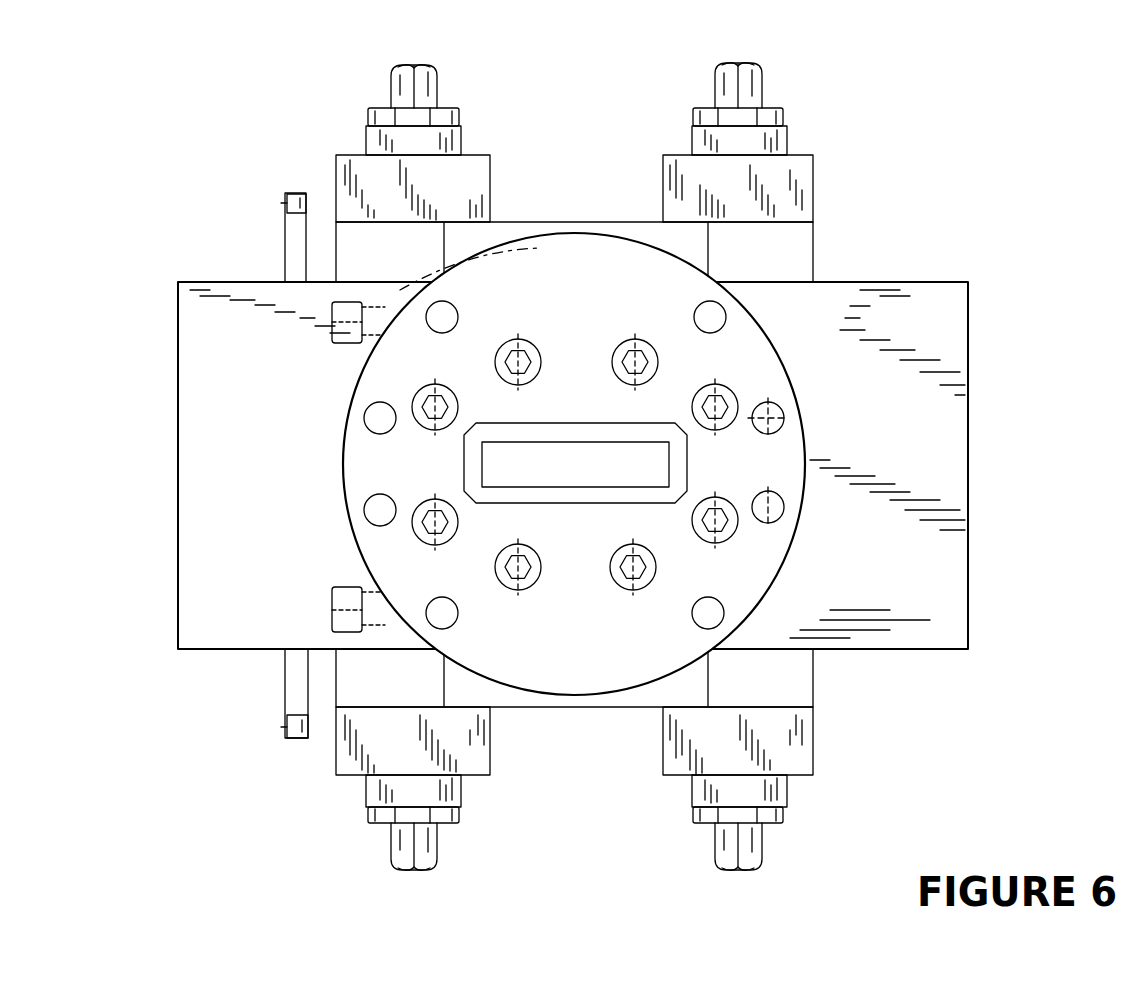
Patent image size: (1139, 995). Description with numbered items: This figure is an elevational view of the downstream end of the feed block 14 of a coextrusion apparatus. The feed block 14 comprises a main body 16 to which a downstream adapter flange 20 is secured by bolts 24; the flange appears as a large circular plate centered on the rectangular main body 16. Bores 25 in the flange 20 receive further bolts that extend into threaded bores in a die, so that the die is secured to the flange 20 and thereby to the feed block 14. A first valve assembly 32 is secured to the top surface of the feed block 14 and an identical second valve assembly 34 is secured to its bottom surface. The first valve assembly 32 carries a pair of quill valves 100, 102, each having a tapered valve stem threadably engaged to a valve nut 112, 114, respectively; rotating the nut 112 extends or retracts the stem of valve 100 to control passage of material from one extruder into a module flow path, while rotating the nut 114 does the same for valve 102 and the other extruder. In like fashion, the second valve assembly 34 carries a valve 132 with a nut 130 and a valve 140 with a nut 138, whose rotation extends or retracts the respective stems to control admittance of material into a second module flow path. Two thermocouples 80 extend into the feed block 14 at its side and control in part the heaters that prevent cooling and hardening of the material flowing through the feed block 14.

The feed block 14 is at (607, 211).
The main body 16 is at (931, 282).
The downstream adapter flange 20 is at (764, 356).
The bolts 24 is at (530, 342).
The bores 25 is at (458, 308).
The first valve assembly 32 is at (838, 196).
The second valve assembly 34 is at (840, 738).
The thermocouples 80 is at (289, 262).
The quill valve 100 is at (752, 93).
The quill valve 102 is at (430, 65).
The valve nut 112 is at (762, 64).
The valve nut 114 is at (434, 101).
The nut 130 is at (714, 848).
The valve 132 is at (724, 869).
The nut 138 is at (438, 848).
The valve 140 is at (428, 869).